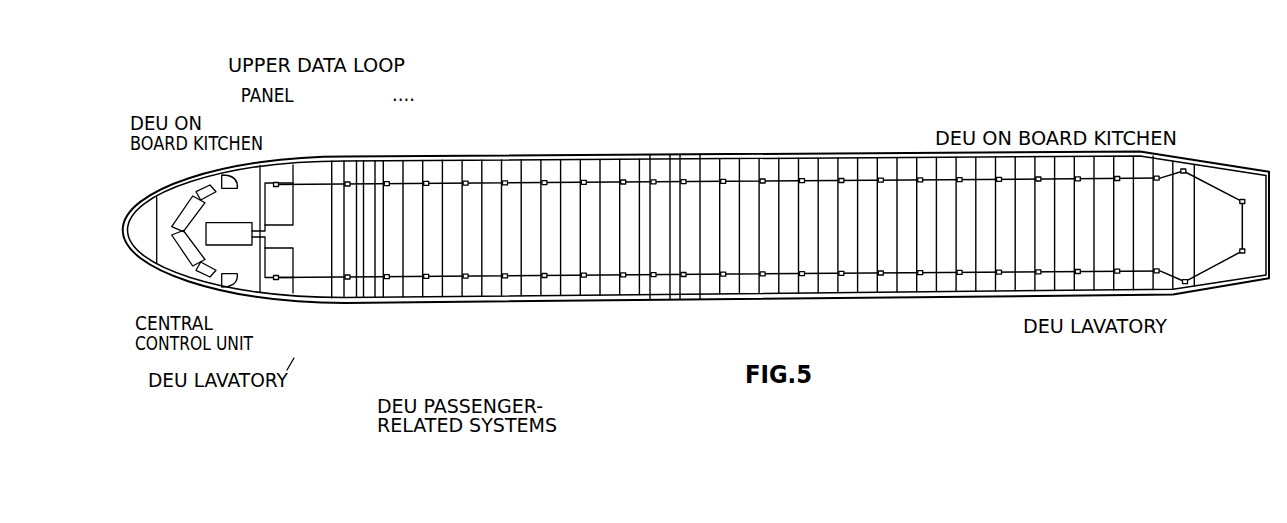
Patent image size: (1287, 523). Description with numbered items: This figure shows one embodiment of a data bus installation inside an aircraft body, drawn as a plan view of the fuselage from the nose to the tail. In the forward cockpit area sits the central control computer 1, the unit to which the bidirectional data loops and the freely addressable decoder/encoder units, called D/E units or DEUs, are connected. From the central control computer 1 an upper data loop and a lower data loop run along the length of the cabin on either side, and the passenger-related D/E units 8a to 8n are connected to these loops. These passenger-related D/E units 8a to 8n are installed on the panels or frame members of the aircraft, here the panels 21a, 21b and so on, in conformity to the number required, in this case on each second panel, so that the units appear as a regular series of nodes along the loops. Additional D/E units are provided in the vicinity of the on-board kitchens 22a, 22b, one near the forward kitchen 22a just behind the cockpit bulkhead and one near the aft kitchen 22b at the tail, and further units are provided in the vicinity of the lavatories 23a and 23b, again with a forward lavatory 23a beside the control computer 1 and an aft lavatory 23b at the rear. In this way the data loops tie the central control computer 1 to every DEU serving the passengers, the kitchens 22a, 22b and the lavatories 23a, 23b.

The central control computer 1 is at (238, 245).
The panel or frame member 21a is at (337, 180).
The panel or frame member 21b is at (346, 182).
The on-board kitchen 22a is at (276, 182).
The on-board kitchen 22b is at (1242, 251).
The lavatory 23a is at (276, 279).
The lavatory 23b is at (1183, 171).
The passenger-related D/E unit 8a is at (348, 279).
The passenger-related D/E unit 8n is at (388, 279).